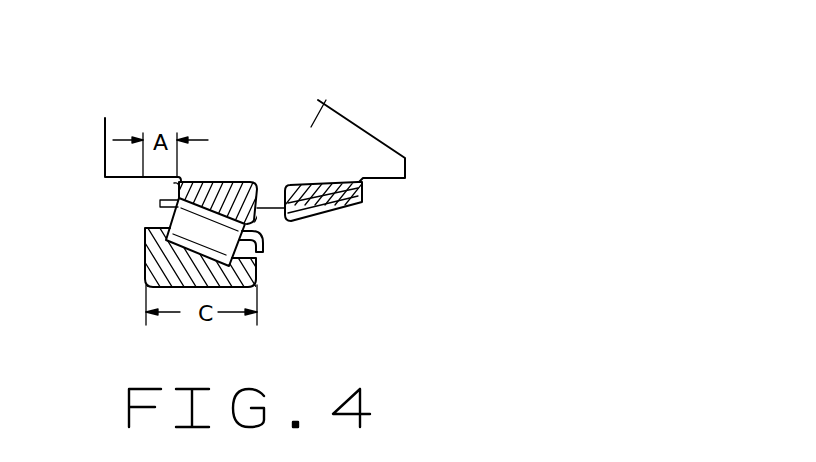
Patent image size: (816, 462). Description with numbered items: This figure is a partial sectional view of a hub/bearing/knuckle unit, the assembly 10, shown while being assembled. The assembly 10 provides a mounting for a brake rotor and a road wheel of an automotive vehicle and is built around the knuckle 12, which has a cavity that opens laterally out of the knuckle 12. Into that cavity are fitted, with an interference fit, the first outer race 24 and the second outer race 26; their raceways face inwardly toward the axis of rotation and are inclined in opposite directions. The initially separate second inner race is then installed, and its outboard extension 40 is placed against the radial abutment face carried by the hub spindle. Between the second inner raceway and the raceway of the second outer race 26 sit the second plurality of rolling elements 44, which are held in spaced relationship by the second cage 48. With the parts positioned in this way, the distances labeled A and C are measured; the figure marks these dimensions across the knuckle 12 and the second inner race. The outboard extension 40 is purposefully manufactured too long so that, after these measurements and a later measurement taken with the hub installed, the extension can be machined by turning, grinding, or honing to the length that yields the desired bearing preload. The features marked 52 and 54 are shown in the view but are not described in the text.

The assembly 10 is at (412, 117).
The knuckle 12 is at (329, 104).
The first outer race 24 is at (318, 196).
The second outer race 26 is at (231, 195).
The outboard extension 40 is at (257, 271).
The second plurality of rolling elements 44 is at (158, 206).
The second cage 48 is at (263, 240).
The hatched body 52 is at (144, 258).
The shoulder 54 is at (174, 185).